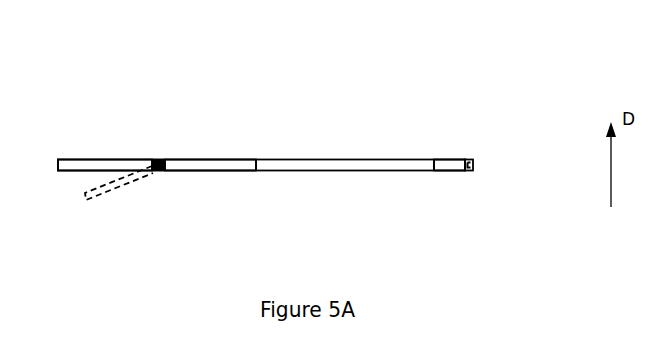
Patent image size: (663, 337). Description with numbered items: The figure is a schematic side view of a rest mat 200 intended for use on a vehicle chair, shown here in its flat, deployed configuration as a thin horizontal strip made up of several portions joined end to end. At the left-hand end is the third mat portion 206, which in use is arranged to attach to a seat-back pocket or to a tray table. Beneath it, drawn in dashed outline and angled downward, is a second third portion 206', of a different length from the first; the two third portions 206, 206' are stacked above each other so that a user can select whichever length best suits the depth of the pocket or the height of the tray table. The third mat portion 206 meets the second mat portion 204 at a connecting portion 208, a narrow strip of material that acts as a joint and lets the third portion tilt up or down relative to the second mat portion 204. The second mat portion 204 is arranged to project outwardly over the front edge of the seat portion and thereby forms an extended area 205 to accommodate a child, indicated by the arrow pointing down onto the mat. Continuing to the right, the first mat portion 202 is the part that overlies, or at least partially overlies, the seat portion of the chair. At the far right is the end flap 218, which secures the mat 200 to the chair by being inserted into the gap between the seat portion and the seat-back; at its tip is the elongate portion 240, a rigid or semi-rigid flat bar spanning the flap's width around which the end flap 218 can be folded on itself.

The mat 200 is at (143, 72).
The first mat portion 202 is at (355, 162).
The second mat portion 204 is at (222, 165).
The extended area 205 is at (288, 106).
The third mat portion 206 is at (87, 140).
The second third portion 206' is at (129, 199).
The connecting portion 208 is at (160, 160).
The end flap 218 is at (445, 162).
The elongate portion 240 is at (473, 165).